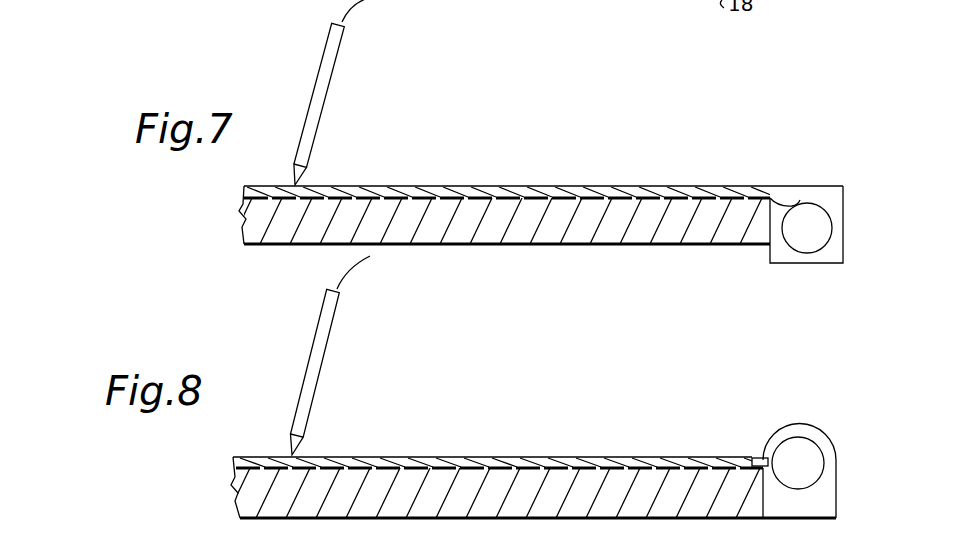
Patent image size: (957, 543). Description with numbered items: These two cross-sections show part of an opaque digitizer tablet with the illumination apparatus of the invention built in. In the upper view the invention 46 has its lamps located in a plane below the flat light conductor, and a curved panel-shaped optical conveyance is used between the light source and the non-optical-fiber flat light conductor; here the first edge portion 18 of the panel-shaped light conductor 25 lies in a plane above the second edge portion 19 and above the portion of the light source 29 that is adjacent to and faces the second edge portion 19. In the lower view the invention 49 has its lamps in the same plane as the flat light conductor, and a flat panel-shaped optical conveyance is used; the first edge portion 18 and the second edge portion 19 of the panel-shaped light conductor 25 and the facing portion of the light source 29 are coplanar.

In FIG. 7, the first edge portion 18 is at (780, 200).
In FIG. 8, the first edge portion 18 is at (752, 459).
In FIG. 7, the second edge portion 19 is at (800, 208).
In FIG. 8, the second edge portion 19 is at (775, 460).
In FIG. 7, the panel-shaped light conductor 25 is at (795, 205).
In FIG. 8, the panel-shaped light conductor 25 is at (754, 458).
In FIG. 7, the light source 29 is at (828, 228).
In FIG. 8, the light source 29 is at (819, 463).
In FIG. 7, the invention 46 is at (674, 156).
In FIG. 8, the invention 49 is at (603, 408).